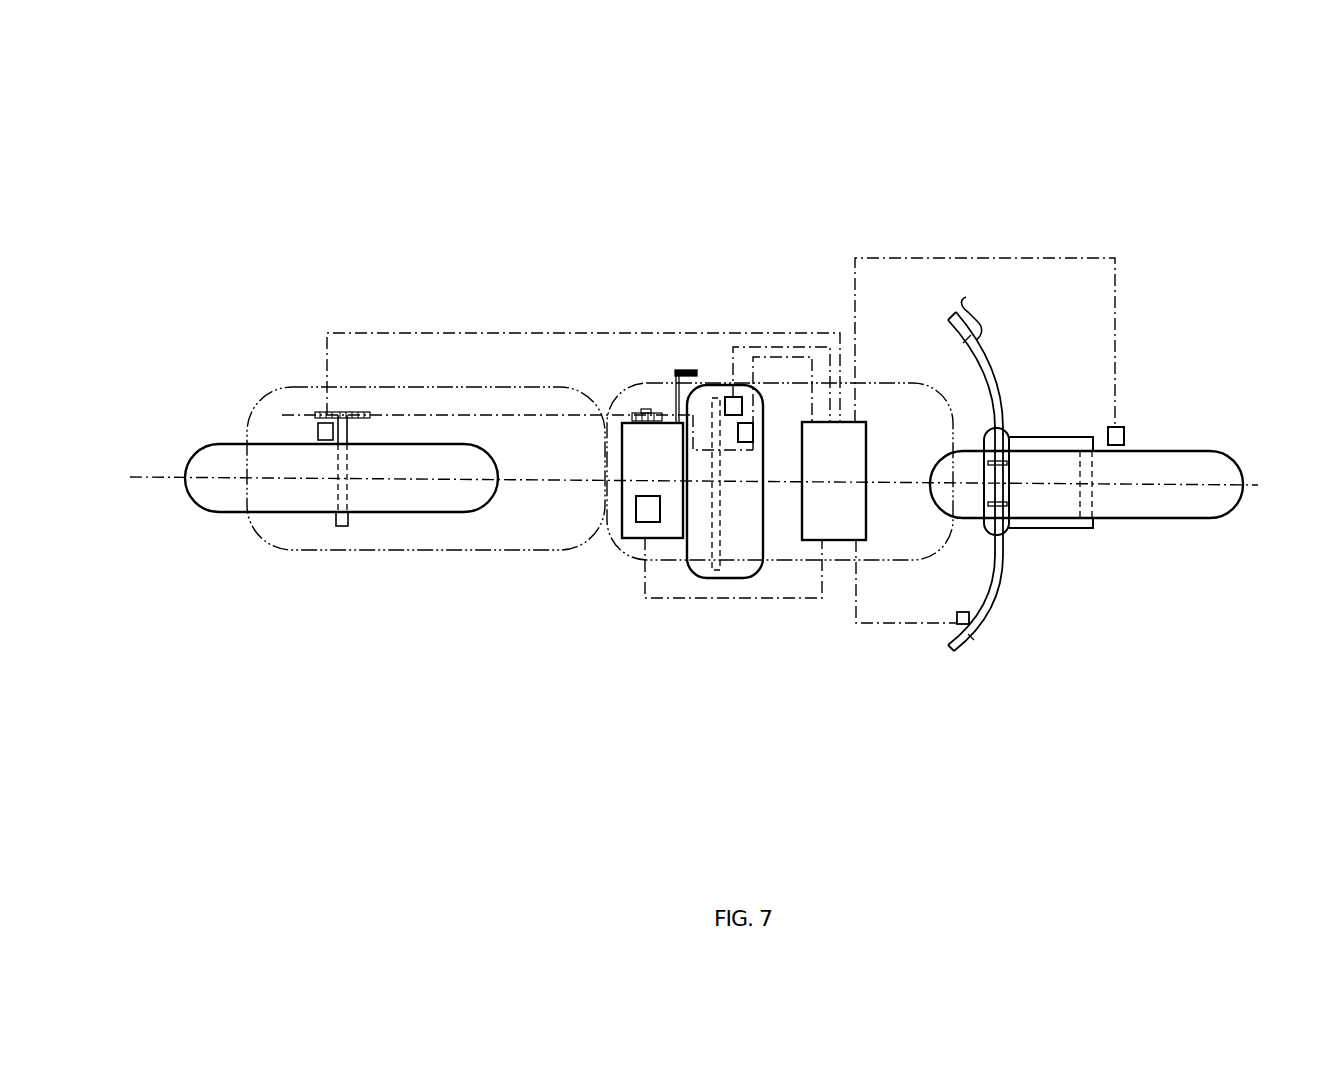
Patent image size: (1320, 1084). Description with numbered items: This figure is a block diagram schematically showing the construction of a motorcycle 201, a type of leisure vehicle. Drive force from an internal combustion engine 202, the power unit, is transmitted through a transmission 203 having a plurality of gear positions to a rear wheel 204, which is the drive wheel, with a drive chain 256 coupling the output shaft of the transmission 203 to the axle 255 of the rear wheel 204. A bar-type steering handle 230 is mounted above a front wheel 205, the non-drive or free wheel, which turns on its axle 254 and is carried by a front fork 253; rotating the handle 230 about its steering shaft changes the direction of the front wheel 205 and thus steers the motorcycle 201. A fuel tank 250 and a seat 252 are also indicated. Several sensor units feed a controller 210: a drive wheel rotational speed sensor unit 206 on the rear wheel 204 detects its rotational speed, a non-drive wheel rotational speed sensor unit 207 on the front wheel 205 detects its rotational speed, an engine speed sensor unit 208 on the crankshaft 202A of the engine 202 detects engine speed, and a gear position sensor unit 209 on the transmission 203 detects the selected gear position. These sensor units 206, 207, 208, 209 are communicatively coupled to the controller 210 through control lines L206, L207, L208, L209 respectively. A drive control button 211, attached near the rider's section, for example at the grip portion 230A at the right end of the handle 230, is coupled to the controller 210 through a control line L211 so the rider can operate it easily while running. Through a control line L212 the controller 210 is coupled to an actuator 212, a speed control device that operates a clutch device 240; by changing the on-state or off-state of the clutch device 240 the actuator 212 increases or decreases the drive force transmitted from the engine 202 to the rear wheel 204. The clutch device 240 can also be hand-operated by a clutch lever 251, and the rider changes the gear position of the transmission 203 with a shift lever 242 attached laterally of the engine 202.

The motorcycle 201 is at (968, 175).
The internal combustion engine 202 is at (727, 580).
The crankshaft 202A is at (697, 575).
The transmission 203 is at (668, 540).
The rear wheel 204 is at (225, 514).
The front wheel 205 is at (1193, 519).
The drive wheel rotational speed sensor unit 206 is at (318, 432).
The non-drive wheel rotational speed sensor unit 207 is at (1125, 437).
The engine speed sensor unit 208 is at (728, 398).
The gear position sensor unit 209 is at (640, 523).
The controller 210 is at (842, 542).
The drive control button 211 is at (970, 623).
The actuator 212 is at (745, 443).
The steering handle 230 is at (1000, 372).
The grip portion 230A is at (960, 642).
The clutch device 240 is at (700, 425).
The shift lever 242 is at (687, 370).
The fuel tank 250 is at (895, 381).
The clutch lever 251 is at (975, 310).
The seat 252 is at (458, 552).
The front fork 253 is at (1062, 535).
The axle of the front wheel 254 is at (1085, 530).
The axle of the rear wheel 255 is at (343, 526).
The drive chain 256 is at (477, 413).
The control line L206 is at (396, 333).
The control line L207 is at (1117, 314).
The control line L208 is at (772, 345).
The control line L209 is at (808, 600).
The control line L211 is at (905, 625).
The control line L212 is at (795, 355).